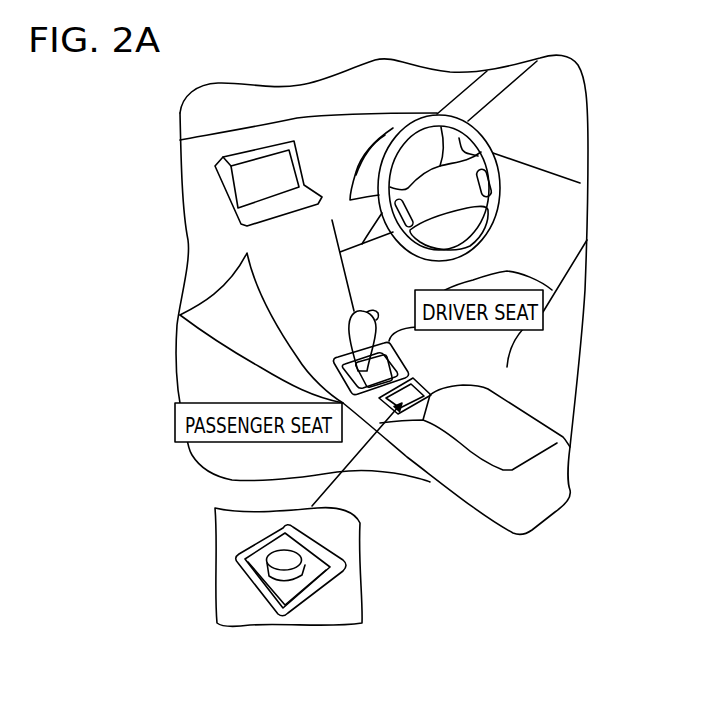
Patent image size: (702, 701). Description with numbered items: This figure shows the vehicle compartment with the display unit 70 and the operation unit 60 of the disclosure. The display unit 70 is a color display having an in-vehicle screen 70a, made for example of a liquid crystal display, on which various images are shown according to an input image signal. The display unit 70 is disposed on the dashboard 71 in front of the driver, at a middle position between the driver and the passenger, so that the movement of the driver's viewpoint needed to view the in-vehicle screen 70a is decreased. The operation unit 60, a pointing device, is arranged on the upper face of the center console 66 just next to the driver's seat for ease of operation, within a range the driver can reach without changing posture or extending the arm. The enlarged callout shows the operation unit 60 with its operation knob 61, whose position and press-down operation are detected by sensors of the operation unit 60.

The in-vehicle screen 70a is at (242, 167).
The display unit 70 is at (228, 176).
The dashboard 71 is at (203, 204).
The center console 66 is at (418, 442).
The operation unit 60 is at (263, 596).
The operation knob 61 is at (295, 571).